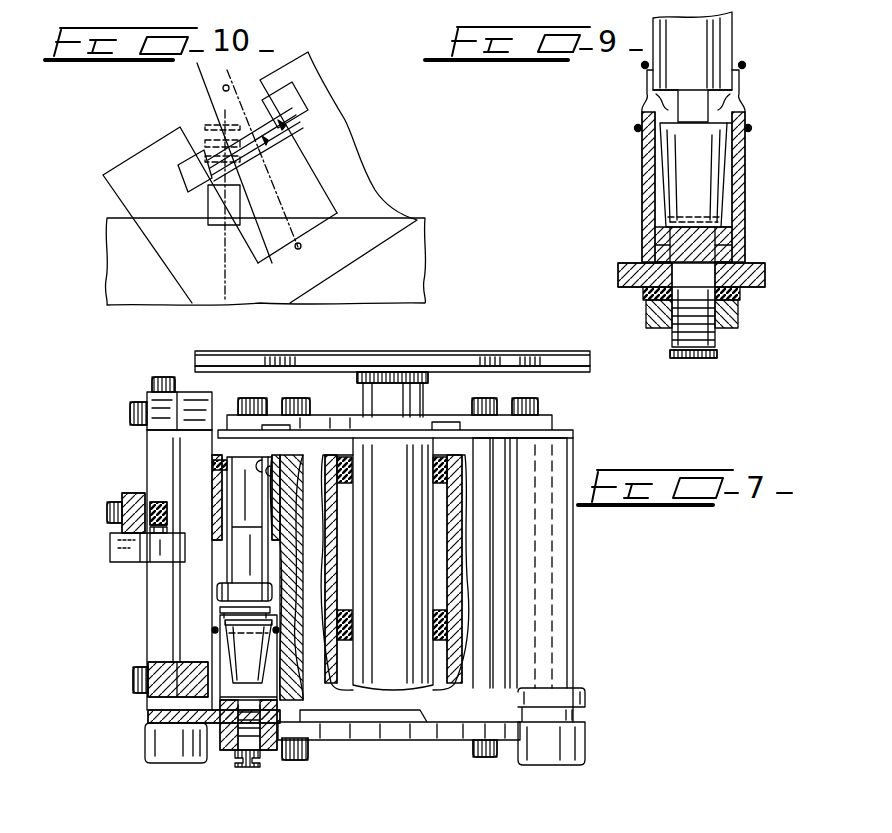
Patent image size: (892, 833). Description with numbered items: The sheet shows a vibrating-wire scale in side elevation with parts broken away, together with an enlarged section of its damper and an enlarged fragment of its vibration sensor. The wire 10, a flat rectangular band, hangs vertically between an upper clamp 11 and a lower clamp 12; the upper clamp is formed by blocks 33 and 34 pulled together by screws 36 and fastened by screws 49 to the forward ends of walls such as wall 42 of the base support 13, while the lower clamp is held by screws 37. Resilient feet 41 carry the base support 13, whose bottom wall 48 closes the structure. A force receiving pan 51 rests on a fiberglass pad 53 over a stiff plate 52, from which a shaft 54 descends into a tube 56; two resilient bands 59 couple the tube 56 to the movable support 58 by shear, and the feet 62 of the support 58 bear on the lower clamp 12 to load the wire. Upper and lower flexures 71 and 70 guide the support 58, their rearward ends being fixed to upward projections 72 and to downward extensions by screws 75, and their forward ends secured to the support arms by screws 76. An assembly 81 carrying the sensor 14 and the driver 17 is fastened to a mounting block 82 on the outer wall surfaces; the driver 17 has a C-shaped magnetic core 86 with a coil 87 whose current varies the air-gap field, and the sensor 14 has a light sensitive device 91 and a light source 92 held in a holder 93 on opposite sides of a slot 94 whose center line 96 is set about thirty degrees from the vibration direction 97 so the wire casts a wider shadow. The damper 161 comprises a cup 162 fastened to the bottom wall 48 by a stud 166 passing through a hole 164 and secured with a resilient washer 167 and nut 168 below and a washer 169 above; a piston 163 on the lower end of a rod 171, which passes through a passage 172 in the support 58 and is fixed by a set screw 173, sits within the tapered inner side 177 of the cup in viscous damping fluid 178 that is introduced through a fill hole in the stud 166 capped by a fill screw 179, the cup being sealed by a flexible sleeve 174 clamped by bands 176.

In FIG. 10, the wire 10 is at (205, 130).
In FIG. 7, the wire 10 is at (178, 592).
In FIG. 7, the upper clamp 11 is at (143, 394).
In FIG. 7, the lower clamp 12 is at (146, 694).
In FIG. 7, the base support 13 is at (580, 568).
In FIG. 10, the frequency sensor 14 is at (170, 154).
In FIG. 7, the frequency sensor 14 is at (160, 565).
In FIG. 10, the driver 17 is at (206, 228).
In FIG. 7, the driver 17 is at (152, 500).
In FIG. 7, the block 33 is at (160, 405).
In FIG. 7, the block 34 is at (300, 394).
In FIG. 7, the screws 36 is at (130, 414).
In FIG. 7, the screws 37 is at (133, 676).
In FIG. 7, the resilient feet 41 is at (145, 740).
In FIG. 7, the outer wall 42 is at (553, 490).
In FIG. 9, the bottom wall 48 is at (760, 275).
In FIG. 7, the screws 49 is at (166, 376).
In FIG. 7, the force receiving pan 51 is at (470, 352).
In FIG. 7, the plate 52 is at (590, 370).
In FIG. 7, the pad 53 is at (590, 358).
In FIG. 7, the shaft 54 is at (398, 400).
In FIG. 7, the tube 56 is at (447, 535).
In FIG. 7, the movable support 58 is at (452, 578).
In FIG. 7, the bands 59 is at (450, 475).
In FIG. 7, the feet 62 is at (147, 633).
In FIG. 7, the lower flexure 70 is at (375, 742).
In FIG. 7, the upper flexure 71 is at (425, 420).
In FIG. 7, the upward projections 72 is at (552, 430).
In FIG. 7, the screws 75 is at (485, 758).
In FIG. 7, the screws 76 is at (280, 400).
In FIG. 7, the assembly 81 is at (108, 550).
In FIG. 10, the mounting block 82 is at (425, 278).
In FIG. 7, the mounting block 82 is at (118, 493).
In FIG. 10, the magnetic core 86 is at (266, 262).
In FIG. 7, the magnetic core 86 is at (167, 530).
In FIG. 7, the coil 87 is at (158, 510).
In FIG. 10, the light sensitive device 91 is at (188, 180).
In FIG. 10, the light source 92 is at (298, 110).
In FIG. 10, the holder 93 is at (352, 147).
In FIG. 10, the slot 94 is at (300, 150).
In FIG. 10, the center line 96 is at (302, 246).
In FIG. 10, the direction of vibration 97 is at (222, 88).
In FIG. 9, the damper 161 is at (638, 158).
In FIG. 7, the damper 161 is at (228, 757).
In FIG. 9, the cup 162 is at (740, 215).
In FIG. 7, the cup 162 is at (277, 694).
In FIG. 9, the piston 163 is at (693, 175).
In FIG. 7, the piston 163 is at (245, 668).
In FIG. 9, the hole 164 is at (708, 270).
In FIG. 9, the stud 166 is at (715, 347).
In FIG. 9, the resilient washer 167 is at (742, 295).
In FIG. 9, the nut 168 is at (738, 318).
In FIG. 9, the washer 169 is at (655, 248).
In FIG. 9, the rod 171 is at (705, 33).
In FIG. 7, the rod 171 is at (248, 520).
In FIG. 7, the passage 172 is at (268, 500).
In FIG. 7, the set screw 173 is at (182, 472).
In FIG. 9, the flexible sleeve 174 is at (740, 98).
In FIG. 7, the flexible sleeve 174 is at (270, 610).
In FIG. 9, the bands 176 is at (640, 68).
In FIG. 7, the bands 176 is at (245, 630).
In FIG. 9, the inner side 177 is at (728, 190).
In FIG. 9, the viscous damping fluid 178 is at (668, 217).
In FIG. 9, the fill screw 179 is at (700, 358).